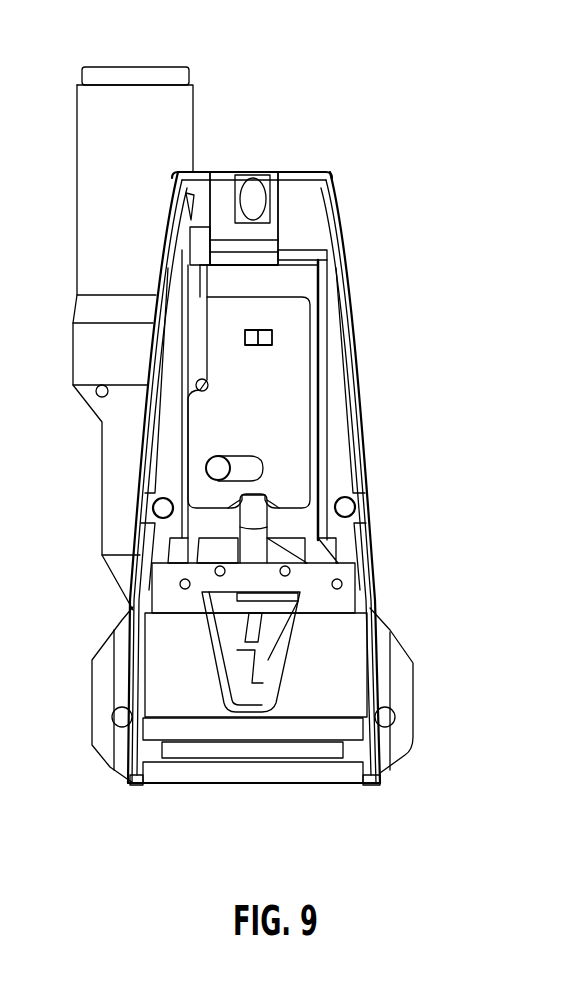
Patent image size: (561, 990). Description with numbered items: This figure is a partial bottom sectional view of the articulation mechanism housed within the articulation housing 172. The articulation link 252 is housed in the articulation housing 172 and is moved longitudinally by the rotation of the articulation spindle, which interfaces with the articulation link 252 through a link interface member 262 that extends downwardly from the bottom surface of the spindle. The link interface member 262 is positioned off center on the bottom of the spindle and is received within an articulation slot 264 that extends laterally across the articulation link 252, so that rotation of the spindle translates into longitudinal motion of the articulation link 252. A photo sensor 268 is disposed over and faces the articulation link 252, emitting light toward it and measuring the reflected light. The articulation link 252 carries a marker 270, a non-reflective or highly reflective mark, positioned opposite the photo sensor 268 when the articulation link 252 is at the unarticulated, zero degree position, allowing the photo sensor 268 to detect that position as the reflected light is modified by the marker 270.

The articulation housing 172 is at (418, 670).
The articulation link 252 is at (218, 427).
The link interface member 262 is at (206, 470).
The articulation slot 264 is at (265, 473).
The photo sensor 268 is at (272, 337).
The marker 270 is at (262, 346).